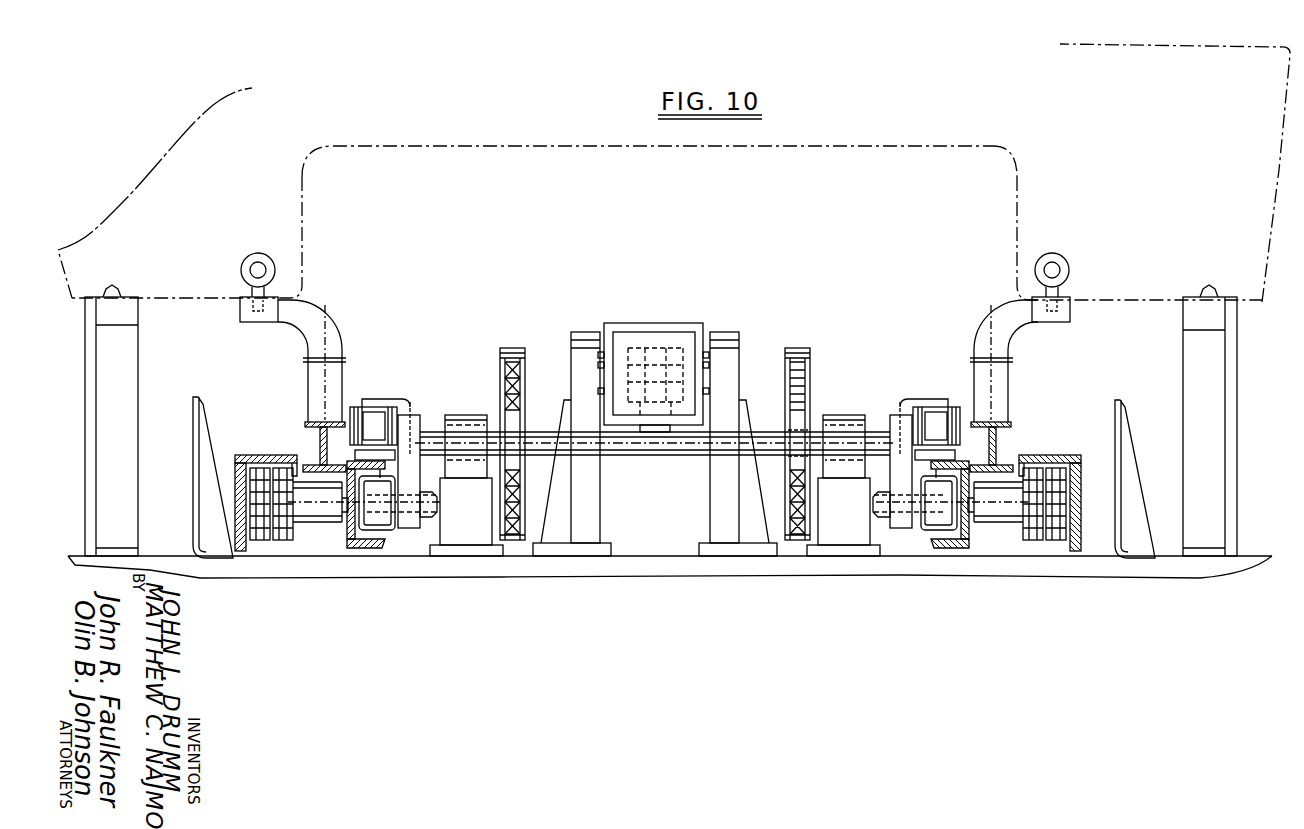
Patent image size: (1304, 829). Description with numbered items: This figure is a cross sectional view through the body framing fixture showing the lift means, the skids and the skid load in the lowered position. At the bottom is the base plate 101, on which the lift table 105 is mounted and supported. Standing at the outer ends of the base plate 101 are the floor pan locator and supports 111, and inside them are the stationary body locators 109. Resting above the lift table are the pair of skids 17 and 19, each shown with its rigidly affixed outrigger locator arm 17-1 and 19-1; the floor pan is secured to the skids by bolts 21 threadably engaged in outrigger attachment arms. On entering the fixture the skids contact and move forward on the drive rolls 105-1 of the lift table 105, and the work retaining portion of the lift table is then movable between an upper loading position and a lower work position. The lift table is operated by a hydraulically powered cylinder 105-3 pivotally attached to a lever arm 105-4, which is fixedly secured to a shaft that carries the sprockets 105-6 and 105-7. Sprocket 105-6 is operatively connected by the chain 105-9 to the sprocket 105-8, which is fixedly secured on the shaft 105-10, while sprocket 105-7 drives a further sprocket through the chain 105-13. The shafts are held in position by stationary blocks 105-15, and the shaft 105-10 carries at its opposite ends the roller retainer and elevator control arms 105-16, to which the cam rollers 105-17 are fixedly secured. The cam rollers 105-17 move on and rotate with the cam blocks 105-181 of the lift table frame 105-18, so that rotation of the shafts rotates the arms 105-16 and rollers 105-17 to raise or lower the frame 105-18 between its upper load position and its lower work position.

The bolts 21 is at (680, 269).
The floor pan locator and supports 111 is at (661, 420).
The stationary body locators 109 is at (674, 456).
The skid 19 is at (298, 434).
The outrigger locator arm 19-1 is at (342, 361).
The skid 17 is at (1005, 366).
The outrigger locator arm 17-1 is at (1025, 361).
The lift table 105 is at (693, 356).
The hydraulically powered cylinder 105-3 is at (660, 350).
The lever arm 105-4 is at (661, 467).
The stationary blocks 105-15 is at (681, 407).
The roller retainer and elevator control arms 105-16 is at (657, 431).
The shaft 105-10 is at (655, 447).
The chain 105-13 is at (564, 410).
The chain 105-9 is at (833, 399).
The sprocket 105-6 is at (844, 372).
The cam rollers 105-17 is at (658, 548).
The cam blocks 105-181 is at (678, 579).
The drive rolls 105-1 is at (666, 563).
The lift table frame 105-18 is at (715, 547).
The sprocket 105-7 is at (651, 472).
The sprocket 105-8 is at (661, 522).
The base plate 101 is at (670, 588).